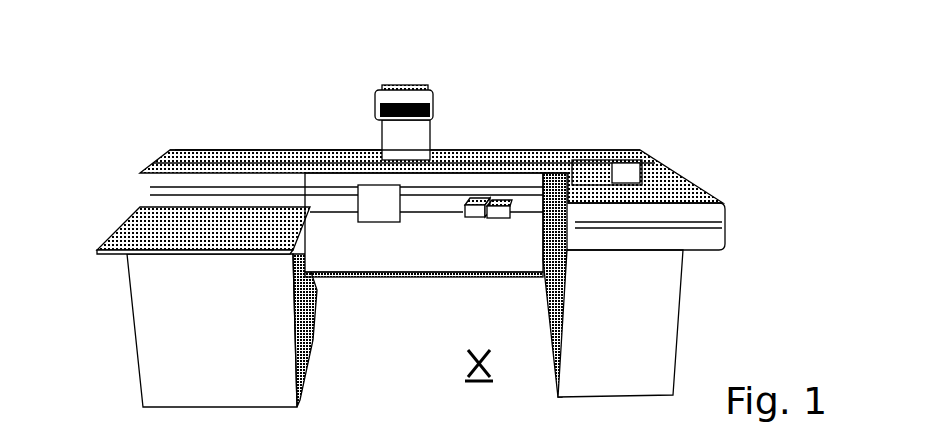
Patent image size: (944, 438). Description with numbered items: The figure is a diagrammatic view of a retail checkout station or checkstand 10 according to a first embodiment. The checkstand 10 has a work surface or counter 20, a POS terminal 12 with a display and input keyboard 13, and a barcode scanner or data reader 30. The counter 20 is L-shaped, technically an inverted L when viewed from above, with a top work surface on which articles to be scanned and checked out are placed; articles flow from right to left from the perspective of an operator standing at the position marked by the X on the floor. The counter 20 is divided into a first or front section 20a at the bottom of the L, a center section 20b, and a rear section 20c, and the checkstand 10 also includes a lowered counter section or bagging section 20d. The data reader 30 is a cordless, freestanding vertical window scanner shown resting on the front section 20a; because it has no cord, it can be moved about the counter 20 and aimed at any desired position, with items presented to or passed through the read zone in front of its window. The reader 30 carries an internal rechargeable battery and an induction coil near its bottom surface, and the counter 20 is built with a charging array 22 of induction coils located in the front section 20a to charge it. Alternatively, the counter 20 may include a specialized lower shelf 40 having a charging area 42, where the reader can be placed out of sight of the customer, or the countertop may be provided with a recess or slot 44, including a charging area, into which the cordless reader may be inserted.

The checkstand 10 is at (608, 44).
The POS terminal 12 is at (451, 93).
The display and input keyboard 13 is at (417, 102).
The counter 20 is at (458, 152).
The front section 20a is at (677, 182).
The center section 20b is at (360, 160).
The rear section 20c is at (187, 163).
The bagging section 20d is at (170, 232).
The charging array 22 is at (585, 182).
The data reader 30 is at (640, 157).
The lower shelf 40 is at (472, 213).
The charging area 42 is at (487, 208).
The slot 44 is at (373, 210).